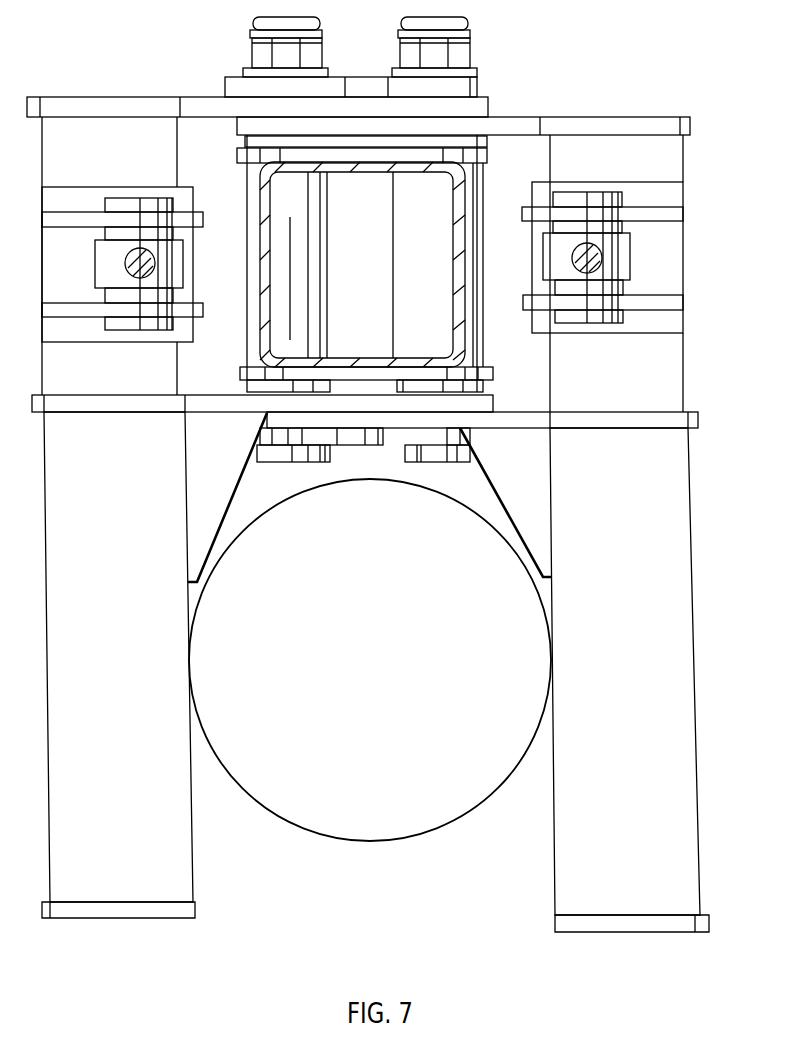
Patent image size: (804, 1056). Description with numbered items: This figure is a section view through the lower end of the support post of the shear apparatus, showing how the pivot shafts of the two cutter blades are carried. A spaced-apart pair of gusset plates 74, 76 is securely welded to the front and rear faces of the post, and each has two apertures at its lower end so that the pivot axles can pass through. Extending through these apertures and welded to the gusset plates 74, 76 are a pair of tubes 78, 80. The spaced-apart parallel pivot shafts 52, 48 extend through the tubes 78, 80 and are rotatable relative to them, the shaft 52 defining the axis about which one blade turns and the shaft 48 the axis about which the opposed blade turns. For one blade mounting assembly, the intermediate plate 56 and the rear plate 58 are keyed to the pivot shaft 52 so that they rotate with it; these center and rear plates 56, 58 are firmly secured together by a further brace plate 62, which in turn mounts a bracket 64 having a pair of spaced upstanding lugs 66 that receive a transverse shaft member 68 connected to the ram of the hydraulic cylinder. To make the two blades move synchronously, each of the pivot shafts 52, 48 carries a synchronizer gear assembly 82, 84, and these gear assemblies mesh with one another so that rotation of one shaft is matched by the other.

The shaft 48 is at (443, 472).
The shaft 52 is at (288, 474).
The intermediate plate 56 is at (506, 415).
The rear plate 58 is at (468, 108).
The further brace plate 62 is at (637, 273).
The bracket 64 is at (629, 256).
The upstanding lugs 66 is at (623, 258).
The transverse shaft member 68 is at (599, 340).
The gusset plate 74 is at (347, 370).
The gusset plate 76 is at (341, 155).
The tube 78 is at (347, 265).
The tube 80 is at (405, 245).
The synchronizer gear assembly 82 is at (365, 470).
The synchronizer gear assembly 84 is at (351, 65).